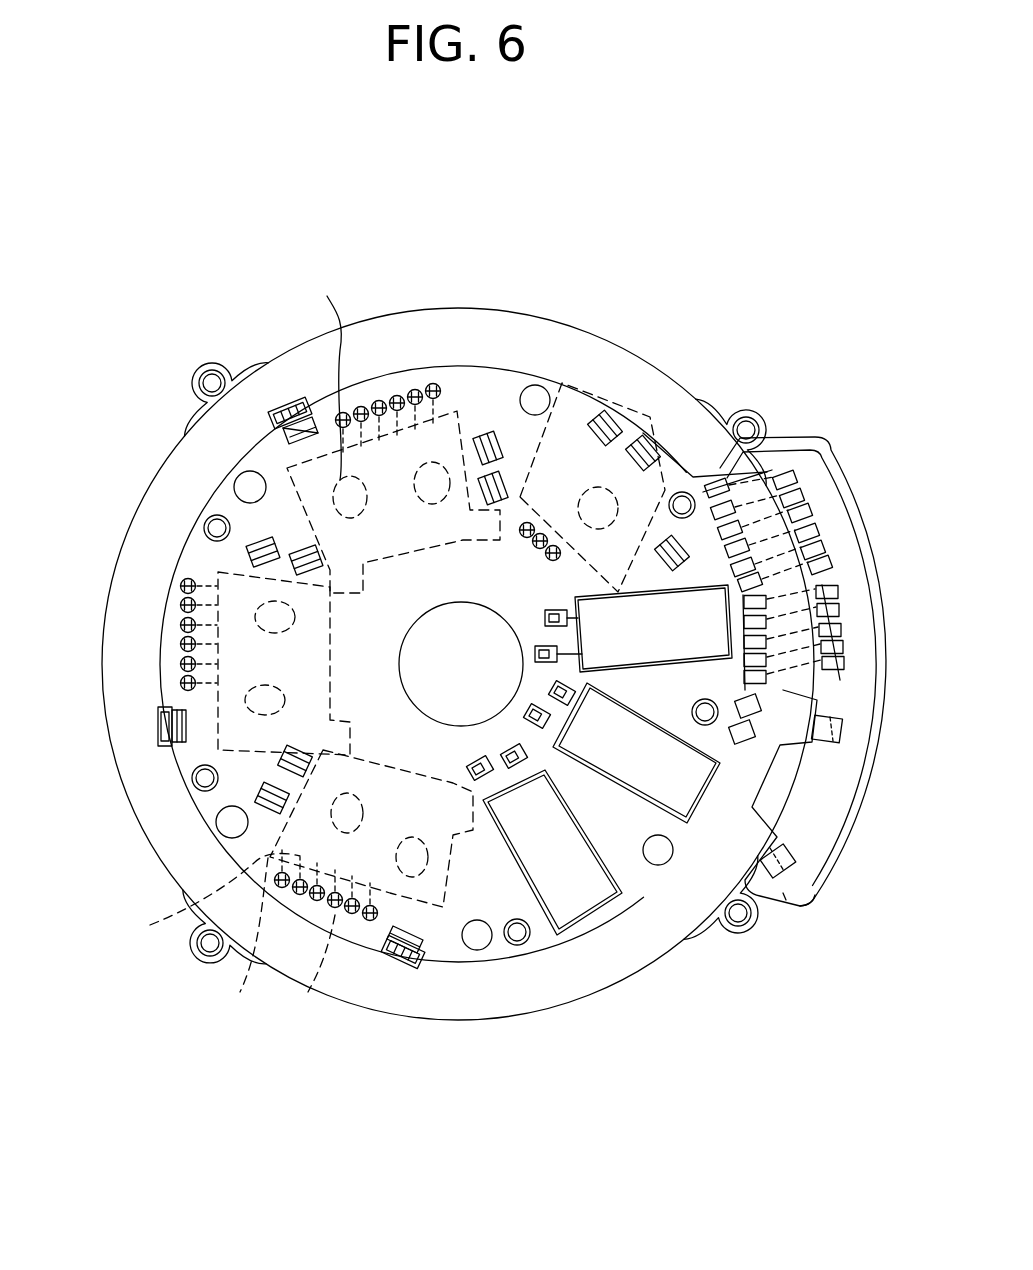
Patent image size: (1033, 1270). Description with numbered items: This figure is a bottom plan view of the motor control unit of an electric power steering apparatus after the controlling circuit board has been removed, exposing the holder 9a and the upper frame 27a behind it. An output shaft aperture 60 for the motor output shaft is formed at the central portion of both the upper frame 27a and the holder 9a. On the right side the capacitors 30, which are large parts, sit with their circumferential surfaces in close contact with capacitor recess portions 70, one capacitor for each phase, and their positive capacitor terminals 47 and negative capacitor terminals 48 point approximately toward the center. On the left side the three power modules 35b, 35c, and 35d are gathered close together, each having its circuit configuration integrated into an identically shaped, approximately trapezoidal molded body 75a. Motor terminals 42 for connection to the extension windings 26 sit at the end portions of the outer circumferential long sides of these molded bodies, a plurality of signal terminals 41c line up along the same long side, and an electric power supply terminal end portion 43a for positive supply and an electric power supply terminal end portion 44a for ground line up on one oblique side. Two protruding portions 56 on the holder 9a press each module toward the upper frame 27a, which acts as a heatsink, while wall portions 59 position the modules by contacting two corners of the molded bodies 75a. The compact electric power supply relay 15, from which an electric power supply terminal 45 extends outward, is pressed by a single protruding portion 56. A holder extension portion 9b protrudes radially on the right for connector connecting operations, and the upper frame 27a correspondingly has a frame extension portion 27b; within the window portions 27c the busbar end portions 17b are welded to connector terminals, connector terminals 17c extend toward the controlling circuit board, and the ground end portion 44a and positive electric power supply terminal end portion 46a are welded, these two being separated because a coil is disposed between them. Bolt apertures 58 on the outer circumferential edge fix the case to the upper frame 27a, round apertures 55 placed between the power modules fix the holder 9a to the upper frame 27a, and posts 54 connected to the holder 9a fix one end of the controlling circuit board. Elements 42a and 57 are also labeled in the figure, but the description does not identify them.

The upper frame 27a is at (580, 345).
The holder 9a is at (445, 370).
The output shaft aperture 60 is at (405, 645).
The electric power supply terminal end portion (ground) 44a is at (260, 470).
The bolt apertures 58 is at (210, 372).
The holder extension portion 9b is at (762, 420).
The round apertures 55 is at (535, 384).
The protruding portions 56 is at (285, 400).
The extension windings 26 is at (290, 425).
The signal terminals 41c is at (275, 1020).
The wall portions 59 is at (540, 520).
The power module (PM) 35d is at (290, 470).
The power module (PM) 35b is at (218, 580).
The power module (PM) 35c is at (284, 871).
The electric power supply relay 15 is at (605, 440).
The electric power supply terminal end portion (positive) 43a is at (250, 545).
The resistor 42a is at (177, 760).
The connector 57 is at (150, 745).
The capacitor recess portions 70 is at (668, 593).
The posts 54 is at (580, 905).
The negative capacitor terminals 48 is at (700, 860).
The motor terminals 42 is at (427, 957).
The molded bodies 75a is at (387, 940).
The busbar end portions 17b is at (820, 470).
The connector terminals 17c is at (735, 420).
The electric power supply terminal 45 is at (692, 470).
The window portions 27c is at (852, 575).
The capacitors 30 is at (790, 792).
The positive capacitor terminals 47 is at (815, 745).
The electric power supply terminal end portion (positive) 46a is at (843, 732).
The frame extension portion 27b is at (800, 912).